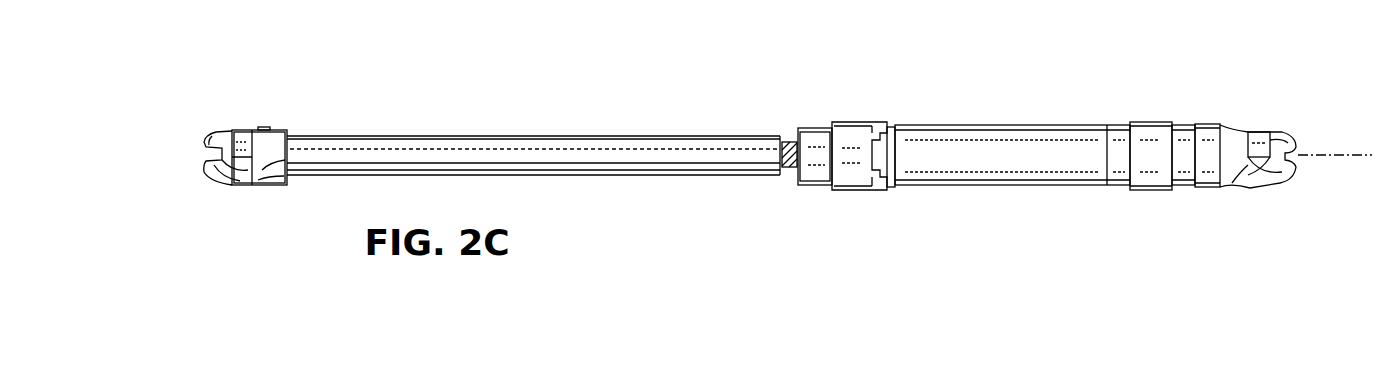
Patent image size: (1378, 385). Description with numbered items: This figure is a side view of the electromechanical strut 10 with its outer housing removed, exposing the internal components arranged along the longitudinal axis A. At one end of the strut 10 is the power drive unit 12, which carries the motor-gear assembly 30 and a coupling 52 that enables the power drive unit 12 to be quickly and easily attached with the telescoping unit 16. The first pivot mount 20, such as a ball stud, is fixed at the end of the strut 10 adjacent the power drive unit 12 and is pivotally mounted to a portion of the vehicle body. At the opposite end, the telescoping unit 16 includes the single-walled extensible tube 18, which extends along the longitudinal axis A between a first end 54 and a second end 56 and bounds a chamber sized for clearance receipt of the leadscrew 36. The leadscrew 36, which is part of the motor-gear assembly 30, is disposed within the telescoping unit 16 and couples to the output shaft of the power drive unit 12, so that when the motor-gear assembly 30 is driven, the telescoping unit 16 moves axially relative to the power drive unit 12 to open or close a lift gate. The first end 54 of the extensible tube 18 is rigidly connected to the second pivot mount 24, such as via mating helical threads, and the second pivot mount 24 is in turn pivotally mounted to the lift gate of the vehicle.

The electromechanical strut 10 is at (1114, 50).
The power drive unit 12 is at (1157, 112).
The telescoping unit 16 is at (305, 190).
The extensible tube 18 is at (298, 150).
The first pivot mount 20 is at (1270, 188).
The second pivot mount 24 is at (229, 186).
The motor-gear assembly 30 is at (1118, 202).
The leadscrew 36 is at (790, 173).
The coupling 52 is at (900, 110).
The first end 54 is at (255, 136).
The second end 56 is at (792, 140).
The longitudinal axis A is at (1330, 157).